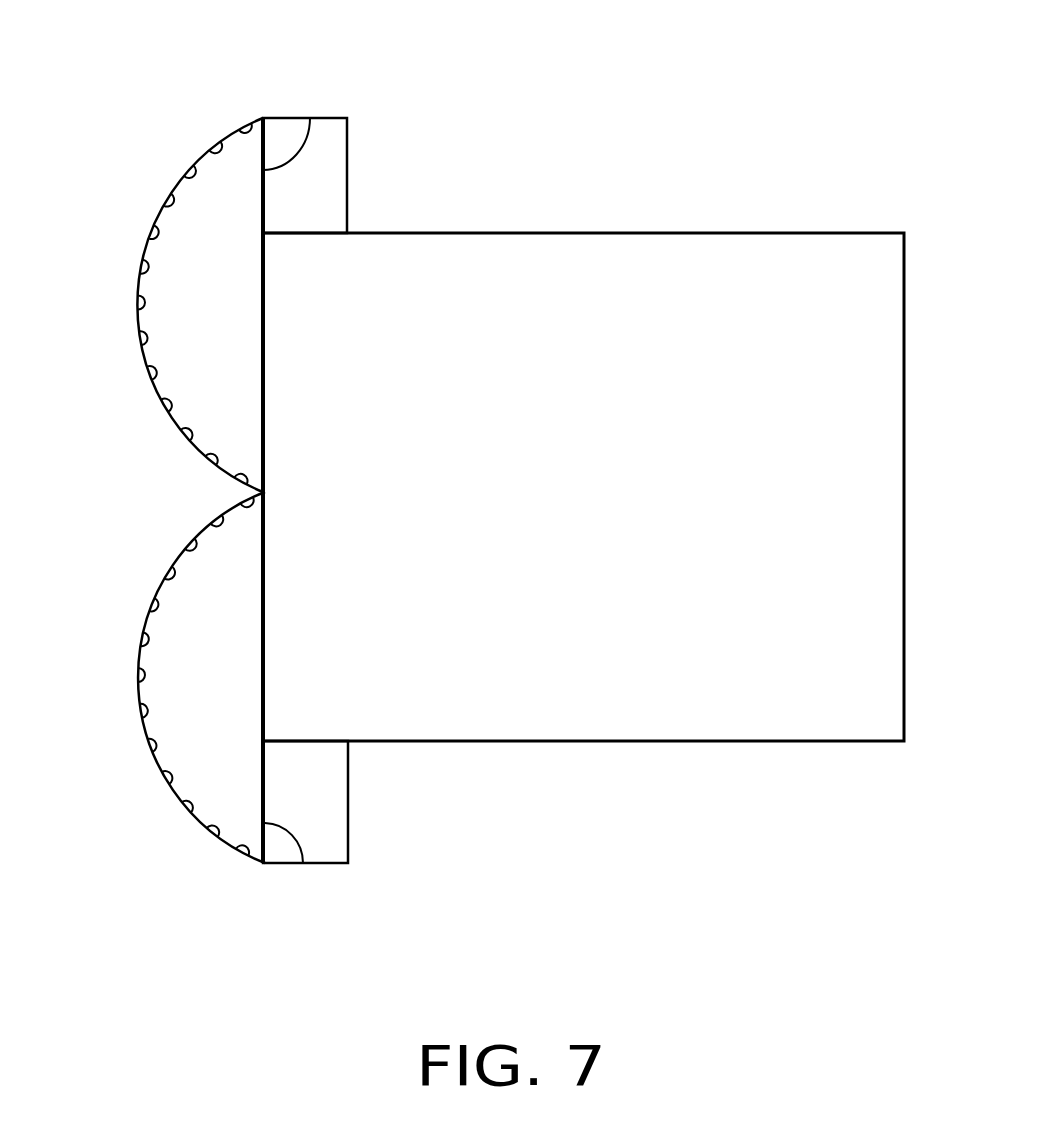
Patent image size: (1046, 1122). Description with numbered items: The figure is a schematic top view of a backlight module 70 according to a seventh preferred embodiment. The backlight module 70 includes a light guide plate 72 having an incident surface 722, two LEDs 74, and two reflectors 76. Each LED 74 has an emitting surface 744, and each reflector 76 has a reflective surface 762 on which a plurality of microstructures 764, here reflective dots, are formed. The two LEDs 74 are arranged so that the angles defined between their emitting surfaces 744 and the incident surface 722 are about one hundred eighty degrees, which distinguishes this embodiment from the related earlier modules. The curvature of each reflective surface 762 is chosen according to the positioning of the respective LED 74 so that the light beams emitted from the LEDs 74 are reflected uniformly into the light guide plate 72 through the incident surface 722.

The backlight module 70 is at (591, 50).
The light guide plate 72 is at (577, 226).
The incident surface 722 is at (263, 290).
The LED 74 is at (312, 181).
The emitting surface 744 is at (310, 118).
The reflector 76 is at (137, 483).
The reflective surface 762 is at (145, 727).
The microstructures 764 is at (217, 152).